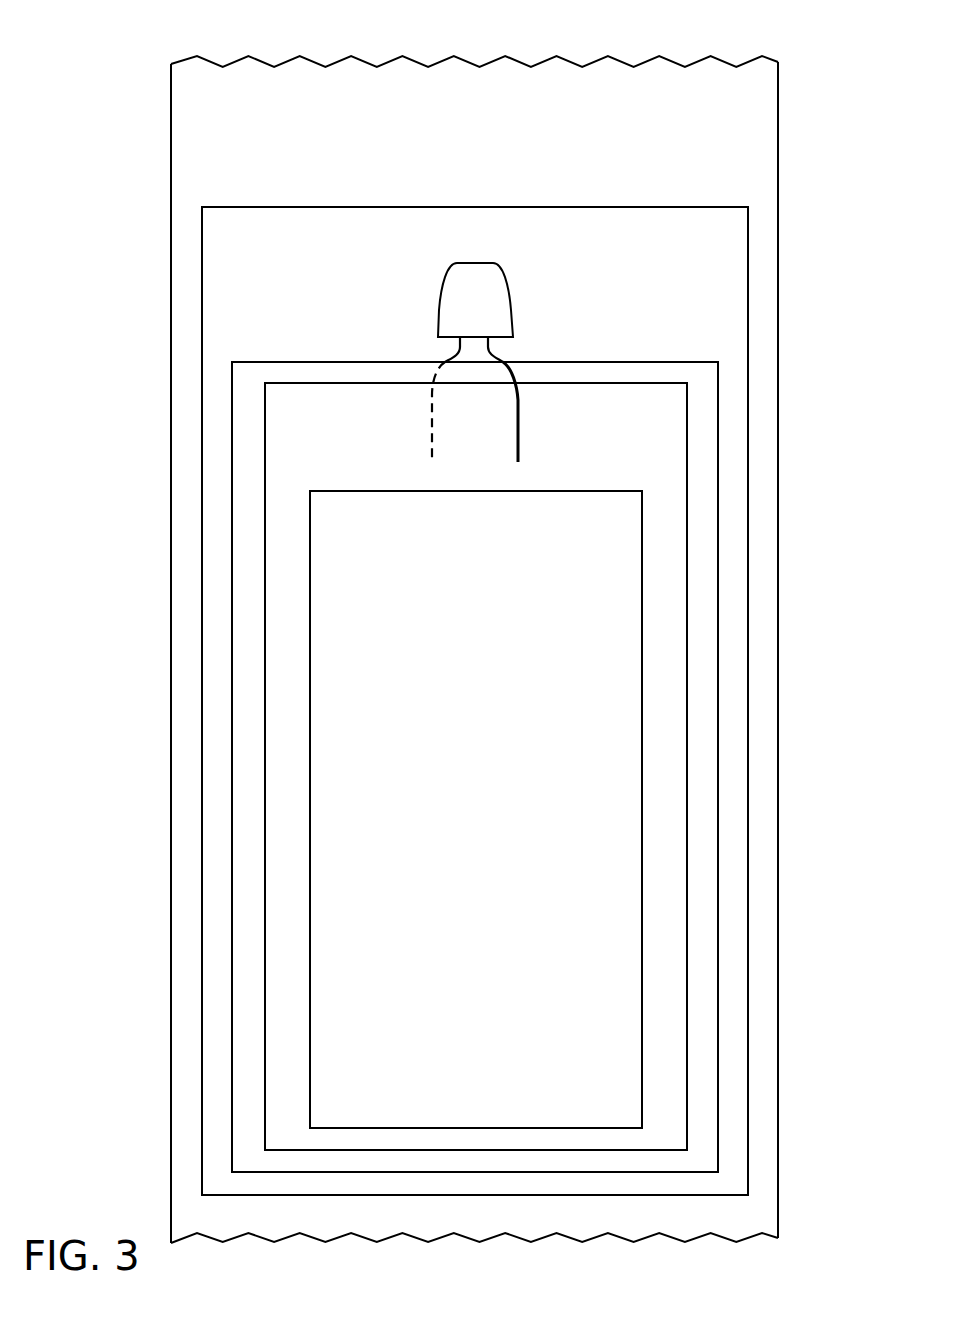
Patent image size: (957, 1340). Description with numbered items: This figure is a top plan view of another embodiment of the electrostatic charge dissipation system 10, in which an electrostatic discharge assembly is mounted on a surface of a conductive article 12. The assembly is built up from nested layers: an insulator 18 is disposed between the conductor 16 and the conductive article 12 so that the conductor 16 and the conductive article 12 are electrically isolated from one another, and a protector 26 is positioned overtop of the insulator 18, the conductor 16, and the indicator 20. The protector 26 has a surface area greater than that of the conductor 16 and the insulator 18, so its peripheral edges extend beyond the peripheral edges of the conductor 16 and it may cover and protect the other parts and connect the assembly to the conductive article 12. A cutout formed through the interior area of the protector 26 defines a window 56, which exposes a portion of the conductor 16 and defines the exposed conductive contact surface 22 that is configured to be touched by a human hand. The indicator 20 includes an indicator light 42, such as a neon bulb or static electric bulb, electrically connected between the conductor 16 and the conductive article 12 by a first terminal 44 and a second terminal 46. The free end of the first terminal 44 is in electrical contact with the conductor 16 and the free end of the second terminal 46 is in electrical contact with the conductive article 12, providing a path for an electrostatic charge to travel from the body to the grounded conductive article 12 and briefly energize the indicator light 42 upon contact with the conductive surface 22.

The electrostatic charge dissipation system 10 is at (821, 73).
The conductive article 12 is at (171, 170).
The conductor 16 is at (687, 675).
The insulator 18 is at (718, 760).
The indicator 20 is at (526, 296).
The conductive contact surface 22 is at (484, 1088).
The protector 26 is at (748, 818).
The indicator light 42 is at (438, 310).
The first terminal 44 is at (519, 440).
The second terminal 46 is at (432, 434).
The window 56 is at (641, 612).